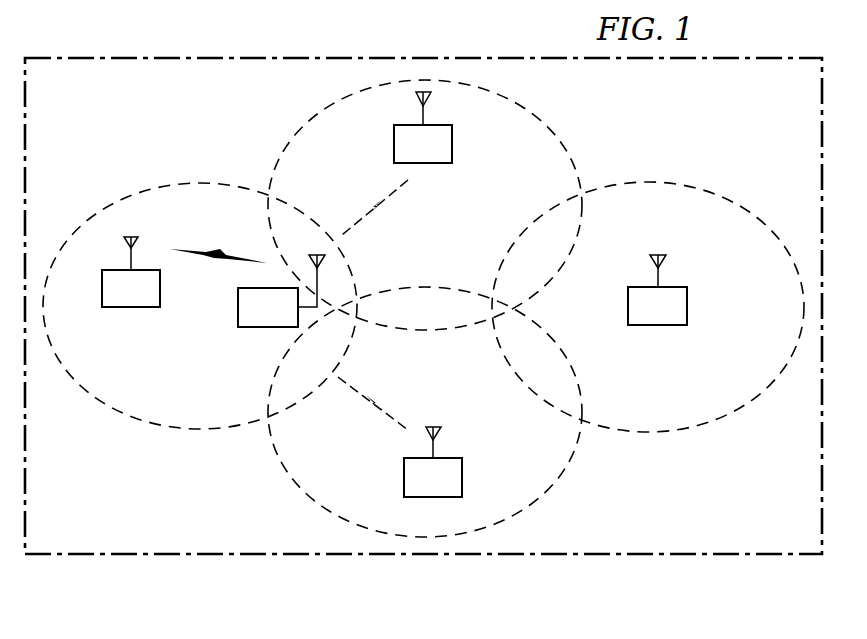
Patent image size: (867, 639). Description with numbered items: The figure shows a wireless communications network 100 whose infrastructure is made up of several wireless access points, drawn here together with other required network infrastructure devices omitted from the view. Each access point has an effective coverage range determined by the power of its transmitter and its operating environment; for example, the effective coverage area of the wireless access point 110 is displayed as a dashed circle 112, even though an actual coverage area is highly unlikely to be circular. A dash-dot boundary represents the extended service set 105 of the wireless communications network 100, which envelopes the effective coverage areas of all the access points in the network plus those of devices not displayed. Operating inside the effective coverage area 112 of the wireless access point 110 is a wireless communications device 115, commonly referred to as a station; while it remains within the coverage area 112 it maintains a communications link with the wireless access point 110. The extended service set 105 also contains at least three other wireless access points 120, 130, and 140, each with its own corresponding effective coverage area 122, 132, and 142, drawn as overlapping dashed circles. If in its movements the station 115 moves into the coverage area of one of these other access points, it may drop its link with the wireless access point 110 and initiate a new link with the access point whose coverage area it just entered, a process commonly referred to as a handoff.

The wireless communications network 100 is at (423, 342).
The extended service set 105 is at (146, 564).
The wireless access point 110 is at (133, 308).
The effective coverage area 112 is at (149, 186).
The wireless communications device 115 is at (238, 310).
The wireless access point 120 is at (432, 164).
The effective coverage area 122 is at (306, 122).
The wireless access point 130 is at (404, 478).
The effective coverage area 132 is at (310, 499).
The wireless access point 140 is at (663, 326).
The effective coverage area 142 is at (706, 190).